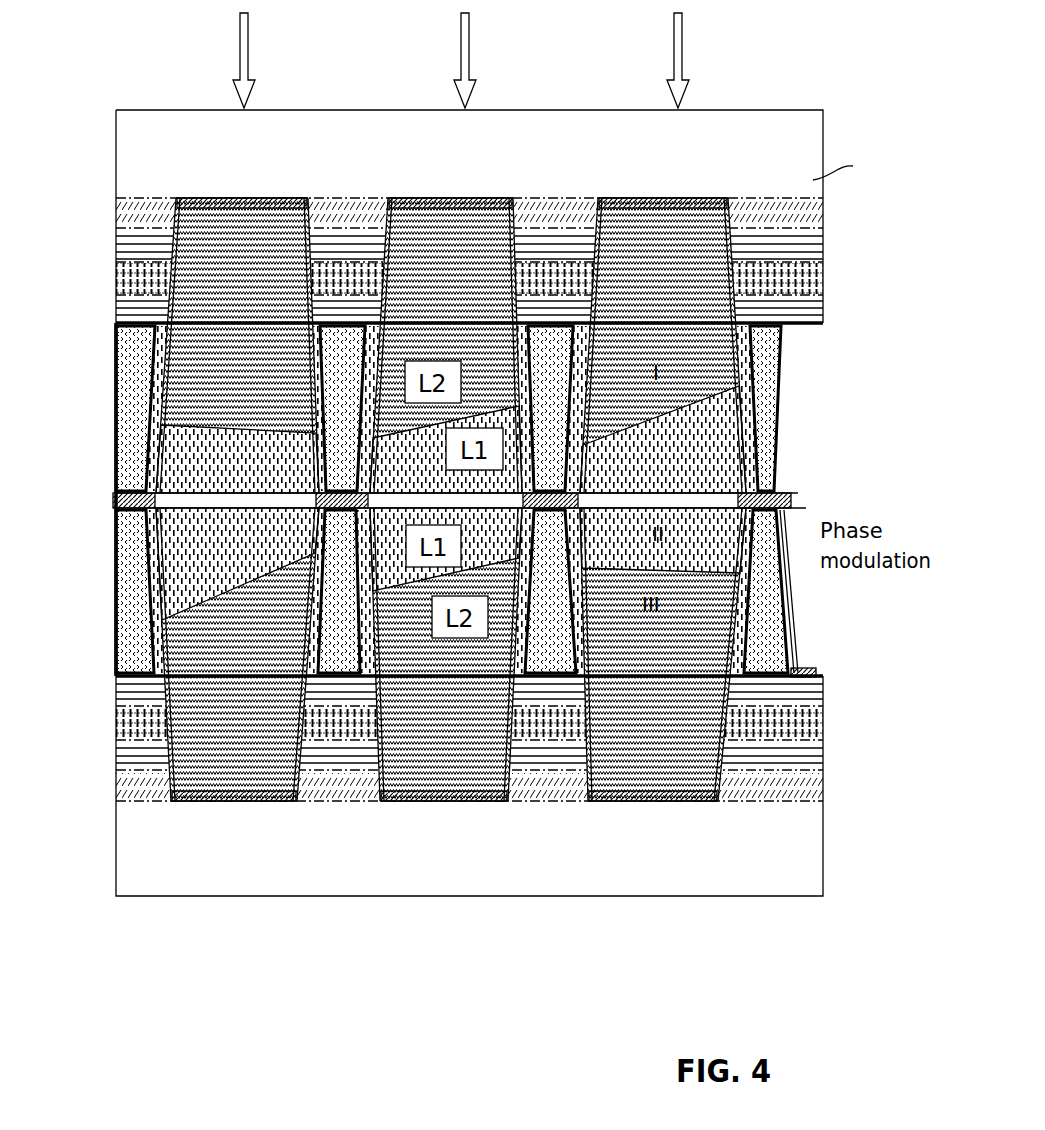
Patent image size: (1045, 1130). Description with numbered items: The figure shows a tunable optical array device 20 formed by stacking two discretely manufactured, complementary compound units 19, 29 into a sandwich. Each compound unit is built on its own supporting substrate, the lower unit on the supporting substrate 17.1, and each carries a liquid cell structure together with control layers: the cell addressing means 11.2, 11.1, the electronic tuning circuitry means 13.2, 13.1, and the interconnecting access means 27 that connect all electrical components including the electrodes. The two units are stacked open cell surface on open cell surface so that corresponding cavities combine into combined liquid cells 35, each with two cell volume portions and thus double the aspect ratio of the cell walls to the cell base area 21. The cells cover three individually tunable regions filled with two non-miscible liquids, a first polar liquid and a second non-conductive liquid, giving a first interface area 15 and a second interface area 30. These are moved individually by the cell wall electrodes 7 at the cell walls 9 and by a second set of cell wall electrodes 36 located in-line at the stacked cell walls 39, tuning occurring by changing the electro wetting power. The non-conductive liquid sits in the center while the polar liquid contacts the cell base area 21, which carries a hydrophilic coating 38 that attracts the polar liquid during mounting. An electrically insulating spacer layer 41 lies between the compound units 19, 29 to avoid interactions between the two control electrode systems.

The tunable optical array device 20 is at (336, 54).
The second interface area 30 is at (488, 200).
The cell addressing means 11.2 is at (806, 211).
The interconnecting access means 27 is at (806, 246).
The electronic tuning circuitry means 13.2 is at (806, 273).
The stacked cell wall 39 is at (125, 368).
The compound unit 19 is at (476, 454).
The spacer layer 41 is at (778, 483).
The compound unit 29 is at (784, 503).
The second set of cell wall electrodes 36 is at (215, 440).
The cell wall electrodes 7 is at (215, 545).
The cell walls 9 is at (125, 627).
The electronic tuning circuitry means 13.1 is at (792, 722).
The cell addressing means 11.1 is at (792, 784).
The supporting substrate 17.1 is at (792, 858).
The first interface area 15 is at (375, 795).
The cell base area 21 is at (430, 793).
The hydrophilic coating 38 is at (643, 795).
The combined liquid cell 35 is at (636, 605).